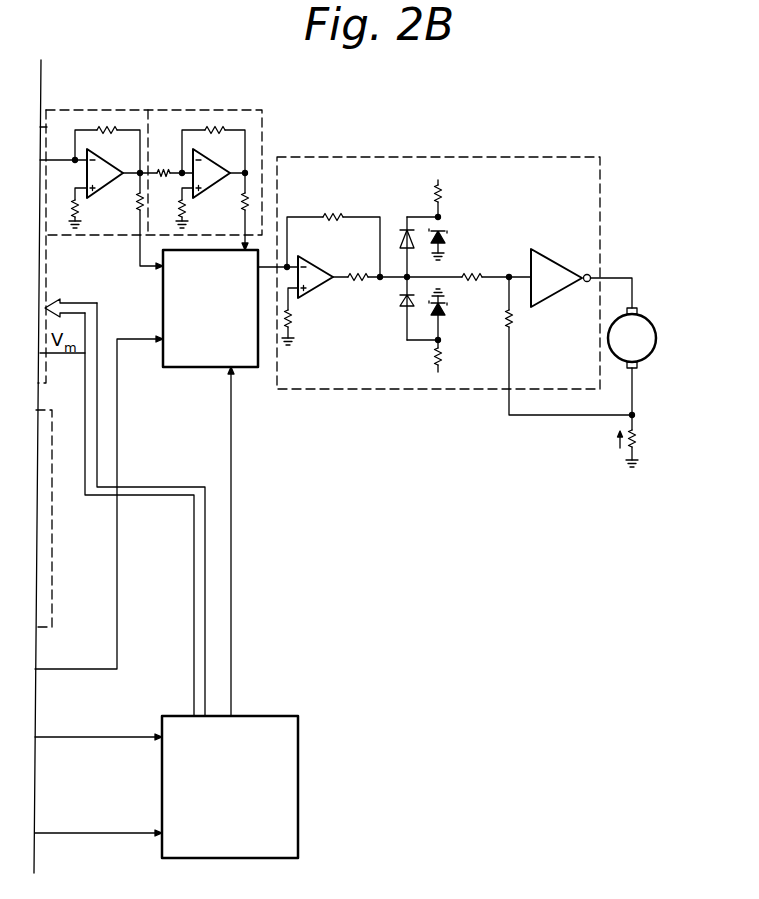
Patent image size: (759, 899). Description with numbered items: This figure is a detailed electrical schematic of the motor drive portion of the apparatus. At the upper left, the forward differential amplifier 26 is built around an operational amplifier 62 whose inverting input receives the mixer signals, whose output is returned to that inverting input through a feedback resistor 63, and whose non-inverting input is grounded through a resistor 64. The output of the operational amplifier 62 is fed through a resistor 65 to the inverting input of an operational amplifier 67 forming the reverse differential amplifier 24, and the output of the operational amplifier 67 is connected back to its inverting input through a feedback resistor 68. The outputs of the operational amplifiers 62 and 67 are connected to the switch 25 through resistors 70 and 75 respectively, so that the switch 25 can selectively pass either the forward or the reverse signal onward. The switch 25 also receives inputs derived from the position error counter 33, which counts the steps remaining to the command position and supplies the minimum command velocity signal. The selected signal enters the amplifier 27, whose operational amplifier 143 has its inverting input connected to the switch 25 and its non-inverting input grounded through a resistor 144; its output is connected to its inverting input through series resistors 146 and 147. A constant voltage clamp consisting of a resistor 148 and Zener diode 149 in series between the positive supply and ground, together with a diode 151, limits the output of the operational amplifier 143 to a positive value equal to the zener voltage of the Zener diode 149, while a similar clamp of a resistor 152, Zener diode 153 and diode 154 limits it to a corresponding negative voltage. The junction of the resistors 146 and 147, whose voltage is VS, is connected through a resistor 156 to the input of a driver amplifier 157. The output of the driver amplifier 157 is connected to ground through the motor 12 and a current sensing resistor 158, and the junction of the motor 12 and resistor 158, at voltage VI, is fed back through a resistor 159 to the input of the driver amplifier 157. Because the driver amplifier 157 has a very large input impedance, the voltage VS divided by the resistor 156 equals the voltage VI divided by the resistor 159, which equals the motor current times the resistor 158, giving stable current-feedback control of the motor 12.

The forward differential amplifier 26 is at (87, 110).
The reverse differential amplifier 24 is at (190, 110).
The operational amplifier 62 is at (104, 193).
The feedback resistor 63 is at (102, 132).
The resistor 64 is at (76, 207).
The resistor 65 is at (164, 167).
The operational amplifier 67 is at (207, 190).
The feedback resistor 68 is at (222, 132).
The resistor 70 is at (140, 215).
The resistor 75 is at (250, 200).
The switch 25 is at (183, 368).
The amplifier 27 is at (445, 157).
The operational amplifier 143 is at (325, 295).
The resistor 144 is at (295, 318).
The resistor 146 is at (355, 275).
The resistor 147 is at (333, 215).
The resistor 148 is at (449, 196).
The Zener diode 149 is at (447, 237).
The diode 151 is at (400, 236).
The resistor 152 is at (433, 360).
The Zener diode 153 is at (447, 313).
The diode 154 is at (402, 322).
The resistor 156 is at (471, 275).
The driver amplifier 157 is at (556, 258).
The resistor 159 is at (514, 322).
The motor 12 is at (654, 328).
The current sensing resistor 158 is at (640, 448).
The position error counter 33 is at (300, 745).
The voltage at the junction of resistors 146 and 147 VS is at (404, 280).
The voltage across resistor 158 VI is at (636, 415).